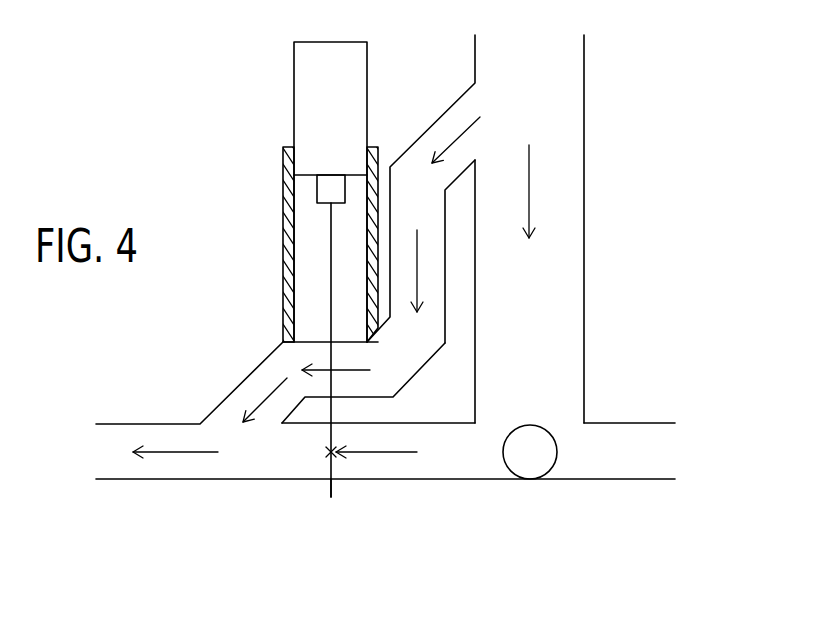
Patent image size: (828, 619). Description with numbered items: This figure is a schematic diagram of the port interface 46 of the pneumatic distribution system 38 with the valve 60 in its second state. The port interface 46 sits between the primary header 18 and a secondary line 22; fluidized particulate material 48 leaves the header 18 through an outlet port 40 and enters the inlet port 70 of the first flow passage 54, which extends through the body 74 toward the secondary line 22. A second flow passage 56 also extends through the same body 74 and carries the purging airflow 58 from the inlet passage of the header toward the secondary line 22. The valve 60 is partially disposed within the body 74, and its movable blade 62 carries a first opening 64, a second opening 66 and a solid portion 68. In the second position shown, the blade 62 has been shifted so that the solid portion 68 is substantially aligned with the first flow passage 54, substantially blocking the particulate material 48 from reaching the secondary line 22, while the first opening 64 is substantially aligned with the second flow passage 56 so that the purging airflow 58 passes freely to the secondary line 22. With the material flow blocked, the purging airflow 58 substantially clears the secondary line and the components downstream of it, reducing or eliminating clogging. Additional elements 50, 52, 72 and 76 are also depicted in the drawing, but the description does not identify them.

The primary header 18 is at (584, 423).
The secondary line 22 is at (127, 481).
The pneumatic distribution system 38 is at (648, 343).
The outlet port 40 is at (470, 482).
The port interface 46 is at (342, 487).
The particulate material 48 is at (529, 185).
The housing wall 50 is at (584, 232).
The passage 52 is at (563, 482).
The first flow passage 54 is at (372, 482).
The second flow passage 56 is at (362, 397).
The purging airflow 58 is at (458, 138).
The valve 60 is at (263, 297).
The blade 62 is at (331, 487).
The first opening 64 is at (331, 352).
The second opening 66 is at (332, 247).
The solid portion 68 is at (331, 438).
The inlet port 70 is at (420, 482).
The actuator 72 is at (294, 74).
The body 74 is at (318, 340).
The seal 76 is at (283, 178).